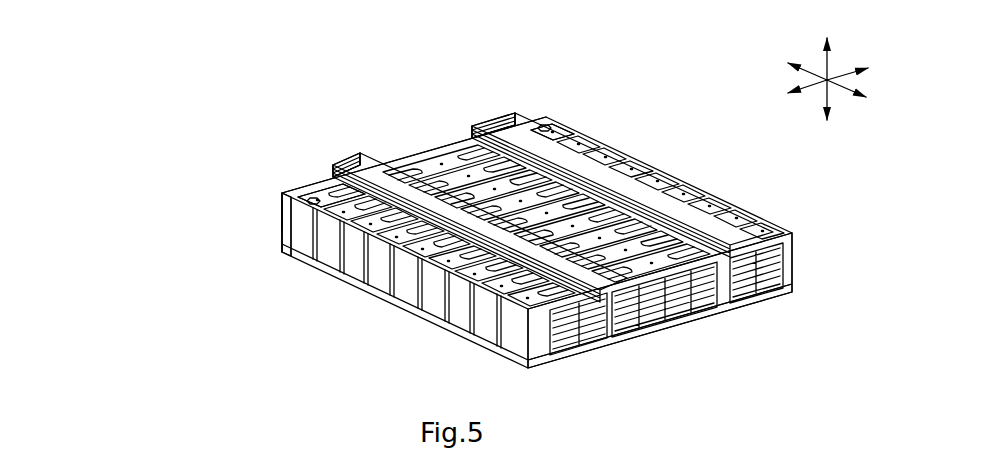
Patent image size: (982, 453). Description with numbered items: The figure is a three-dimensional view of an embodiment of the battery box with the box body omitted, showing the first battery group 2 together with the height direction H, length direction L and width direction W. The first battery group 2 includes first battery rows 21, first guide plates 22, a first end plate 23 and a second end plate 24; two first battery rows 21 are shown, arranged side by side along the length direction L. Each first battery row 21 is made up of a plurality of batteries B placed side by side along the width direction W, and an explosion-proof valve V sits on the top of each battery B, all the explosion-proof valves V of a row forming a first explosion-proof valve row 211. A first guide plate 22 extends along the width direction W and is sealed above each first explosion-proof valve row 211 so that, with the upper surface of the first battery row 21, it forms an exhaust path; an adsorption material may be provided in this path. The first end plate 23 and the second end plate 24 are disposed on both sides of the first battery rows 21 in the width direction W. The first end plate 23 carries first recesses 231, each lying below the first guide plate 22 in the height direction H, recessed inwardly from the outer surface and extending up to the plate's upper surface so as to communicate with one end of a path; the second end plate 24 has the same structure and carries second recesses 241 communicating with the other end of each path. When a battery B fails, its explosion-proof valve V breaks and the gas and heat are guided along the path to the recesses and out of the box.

The first battery group 2 is at (80, 167).
The first battery row 21 is at (293, 189).
The first explosion-proof valve row 211 is at (347, 181).
The first guide plate 22 is at (568, 150).
The first end plate 23 is at (796, 235).
The first recess 231 is at (736, 281).
The second end plate 24 is at (281, 244).
The second recess 241 is at (346, 168).
The battery B is at (357, 276).
The explosion-proof valve V is at (280, 208).
The height direction H is at (824, 63).
The length direction L is at (836, 75).
The width direction W is at (839, 89).